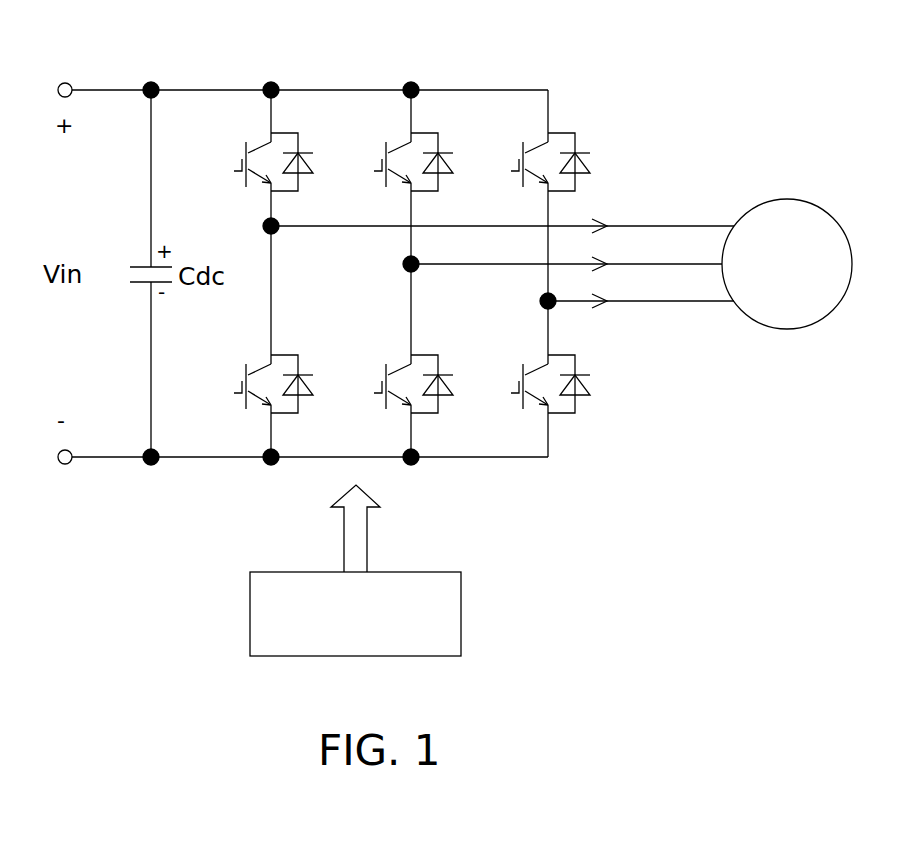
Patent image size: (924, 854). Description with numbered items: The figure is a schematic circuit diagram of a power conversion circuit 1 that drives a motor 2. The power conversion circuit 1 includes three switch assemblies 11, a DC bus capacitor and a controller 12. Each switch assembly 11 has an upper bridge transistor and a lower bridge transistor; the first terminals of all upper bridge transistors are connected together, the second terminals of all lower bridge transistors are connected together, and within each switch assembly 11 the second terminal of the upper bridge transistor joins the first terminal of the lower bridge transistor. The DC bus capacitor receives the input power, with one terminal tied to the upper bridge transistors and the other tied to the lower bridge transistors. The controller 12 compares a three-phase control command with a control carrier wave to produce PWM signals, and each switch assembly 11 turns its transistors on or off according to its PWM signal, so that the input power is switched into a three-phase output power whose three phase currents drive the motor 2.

The power conversion circuit 1 is at (596, 69).
The switch assembly 11 is at (268, 75).
The motor 2 is at (826, 211).
The controller 12 is at (461, 614).